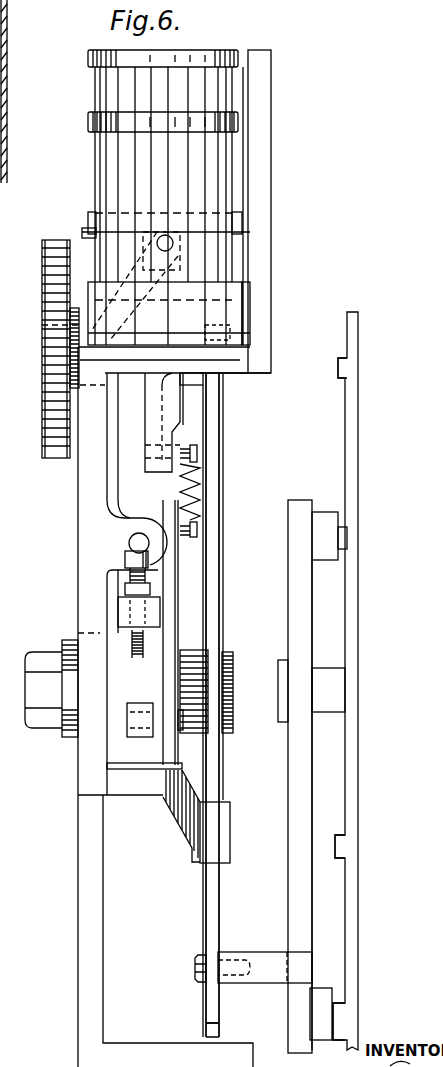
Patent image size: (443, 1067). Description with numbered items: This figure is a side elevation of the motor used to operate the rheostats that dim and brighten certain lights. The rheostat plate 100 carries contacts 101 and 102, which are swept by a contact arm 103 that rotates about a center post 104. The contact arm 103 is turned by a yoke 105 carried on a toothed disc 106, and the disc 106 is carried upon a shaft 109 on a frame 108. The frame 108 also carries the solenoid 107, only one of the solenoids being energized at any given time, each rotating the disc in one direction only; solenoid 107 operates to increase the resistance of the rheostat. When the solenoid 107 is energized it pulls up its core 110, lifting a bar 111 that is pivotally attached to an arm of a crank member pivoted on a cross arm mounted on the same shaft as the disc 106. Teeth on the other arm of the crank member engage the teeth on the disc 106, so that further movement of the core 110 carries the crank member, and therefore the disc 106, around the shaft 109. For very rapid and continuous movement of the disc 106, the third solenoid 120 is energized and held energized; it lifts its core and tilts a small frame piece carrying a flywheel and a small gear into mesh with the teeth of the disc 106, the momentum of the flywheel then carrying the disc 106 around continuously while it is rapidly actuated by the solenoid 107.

The rheostat plate 100 is at (356, 790).
The contact 101 is at (343, 541).
The contact 102 is at (341, 373).
The contact arm 103 is at (290, 847).
The center post 104 is at (337, 686).
The yoke 105 is at (252, 950).
The toothed disc 106 is at (216, 910).
The solenoid 107 is at (232, 127).
The frame 108 is at (78, 852).
The shaft 109 is at (40, 688).
The core 110 is at (180, 410).
The bar 111 is at (182, 580).
The third solenoid 120 is at (135, 78).